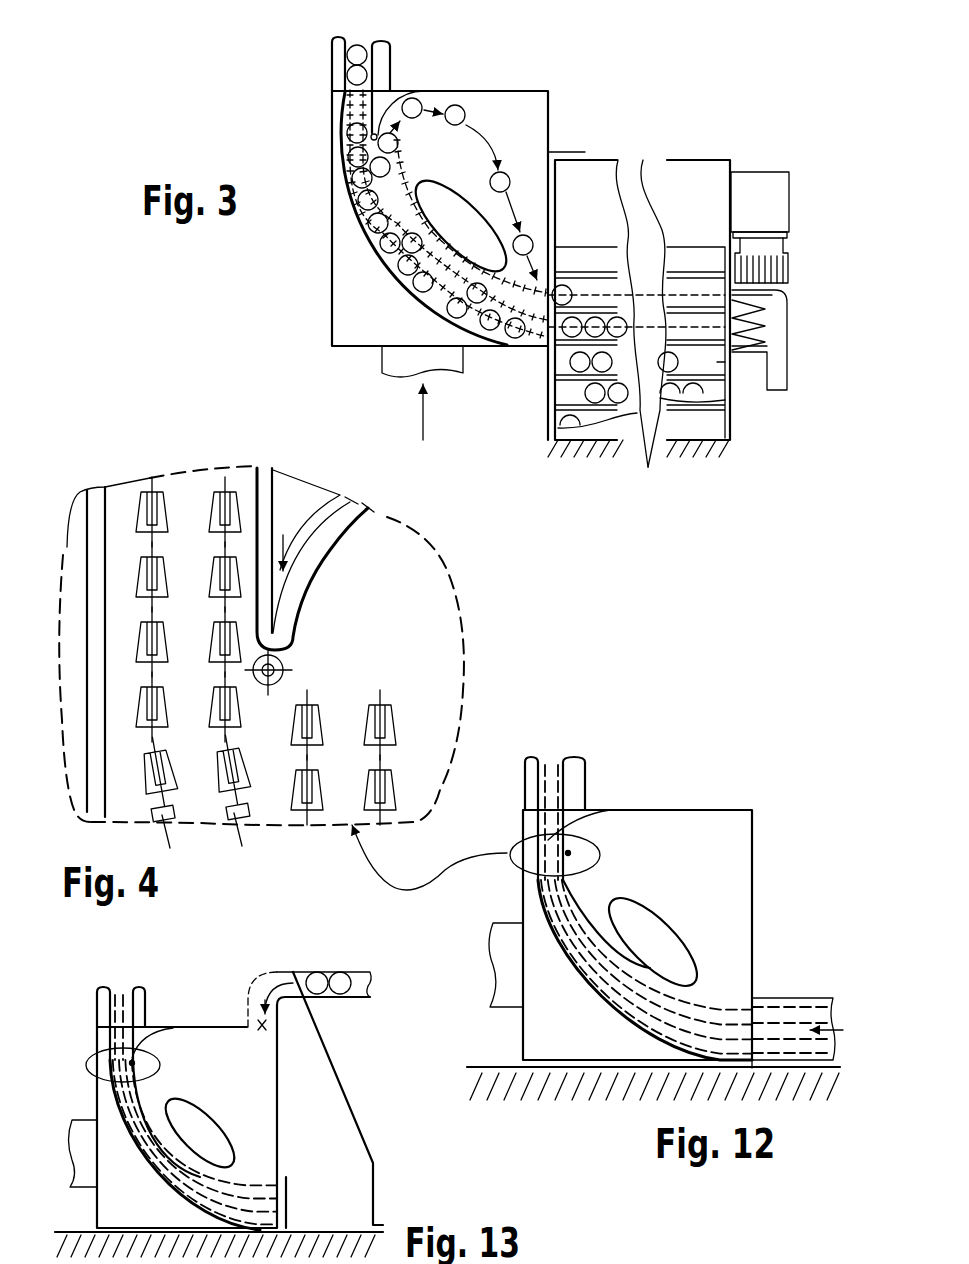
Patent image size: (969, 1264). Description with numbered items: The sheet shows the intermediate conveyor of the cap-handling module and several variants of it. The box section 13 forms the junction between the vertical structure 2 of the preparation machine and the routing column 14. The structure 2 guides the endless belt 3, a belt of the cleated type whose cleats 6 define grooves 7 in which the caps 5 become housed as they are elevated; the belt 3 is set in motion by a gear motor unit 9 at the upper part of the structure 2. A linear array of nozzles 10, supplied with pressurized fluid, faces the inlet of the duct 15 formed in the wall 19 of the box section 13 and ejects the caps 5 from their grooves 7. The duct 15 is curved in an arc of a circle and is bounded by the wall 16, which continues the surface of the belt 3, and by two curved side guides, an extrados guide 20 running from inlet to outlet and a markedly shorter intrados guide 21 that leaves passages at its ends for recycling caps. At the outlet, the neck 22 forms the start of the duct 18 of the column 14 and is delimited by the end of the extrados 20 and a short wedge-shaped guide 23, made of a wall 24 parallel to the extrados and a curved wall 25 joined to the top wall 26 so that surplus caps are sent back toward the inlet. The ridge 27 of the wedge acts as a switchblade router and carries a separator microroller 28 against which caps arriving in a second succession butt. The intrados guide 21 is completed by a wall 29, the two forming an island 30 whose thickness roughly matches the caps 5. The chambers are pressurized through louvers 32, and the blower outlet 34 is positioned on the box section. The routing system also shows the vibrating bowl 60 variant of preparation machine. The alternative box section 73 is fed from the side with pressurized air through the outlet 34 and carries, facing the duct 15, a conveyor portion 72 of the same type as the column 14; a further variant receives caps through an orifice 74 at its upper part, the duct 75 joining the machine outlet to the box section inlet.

In FIG. 3, the vertical structure 2 is at (703, 440).
In FIG. 3, the endless belt 3 is at (641, 325).
In FIG. 3, the caps 5 is at (360, 48).
In FIG. 3, the cleats 6 is at (568, 410).
In FIG. 3, the grooves 7 is at (717, 362).
In FIG. 3, the gear motor unit 9 is at (767, 200).
In FIG. 3, the nozzles 10 is at (791, 347).
In FIG. 3, the box section 13 is at (330, 330).
In FIG. 13, the box section 13 is at (222, 1018).
In FIG. 3, the column 14 is at (330, 44).
In FIG. 12, the column 14 is at (588, 770).
In FIG. 13, the column 14 is at (147, 997).
In FIG. 3, the duct 15 is at (387, 257).
In FIG. 4, the duct 15 is at (200, 751).
In FIG. 12, the duct 15 is at (703, 1010).
In FIG. 13, the duct 15 is at (240, 1180).
In FIG. 3, the wall 16 is at (530, 100).
In FIG. 4, the wall 16 is at (418, 573).
In FIG. 3, the duct of the column 18 is at (345, 62).
In FIG. 12, the duct of the column 18 is at (568, 851).
In FIG. 13, the duct of the column 18 is at (132, 1061).
In FIG. 3, the wall 19 is at (550, 110).
In FIG. 3, the extrados guide 20 is at (345, 175).
In FIG. 4, the extrados guide 20 is at (92, 516).
In FIG. 12, the extrados guide 20 is at (567, 977).
In FIG. 13, the extrados guide 20 is at (137, 1160).
In FIG. 3, the intrados guide 21 is at (393, 230).
In FIG. 12, the intrados guide 21 is at (645, 962).
In FIG. 13, the intrados guide 21 is at (197, 1153).
In FIG. 3, the neck 22 is at (345, 105).
In FIG. 4, the neck 22 is at (187, 547).
In FIG. 12, the neck 22 is at (550, 820).
In FIG. 13, the neck 22 is at (120, 1035).
In FIG. 3, the wedge-shaped guide 23 is at (391, 72).
In FIG. 4, the wedge-shaped guide 23 is at (330, 492).
In FIG. 4, the wall 24 is at (275, 468).
In FIG. 4, the curved wall 25 is at (352, 514).
In FIG. 3, the top wall 26 is at (462, 90).
In FIG. 4, the ridge 27 is at (293, 642).
In FIG. 4, the microroller 28 is at (285, 670).
In FIG. 3, the wall 29 is at (465, 188).
In FIG. 3, the island 30 is at (472, 234).
In FIG. 12, the island 30 is at (666, 952).
In FIG. 13, the island 30 is at (214, 1141).
In FIG. 3, the louvers 32 is at (410, 272).
In FIG. 4, the louvers 32 is at (187, 507).
In FIG. 3, the blower outlet 34 is at (382, 360).
In FIG. 12, the blower outlet 34 is at (497, 1023).
In FIG. 13, the blower outlet 34 is at (72, 1198).
In FIG. 13, the vibrating bowl 60 is at (348, 1102).
In FIG. 12, the conveyor portion 72 is at (780, 1000).
In FIG. 12, the box section 73 is at (683, 808).
In FIG. 13, the orifice 74 is at (265, 1048).
In FIG. 13, the duct 75 is at (270, 966).